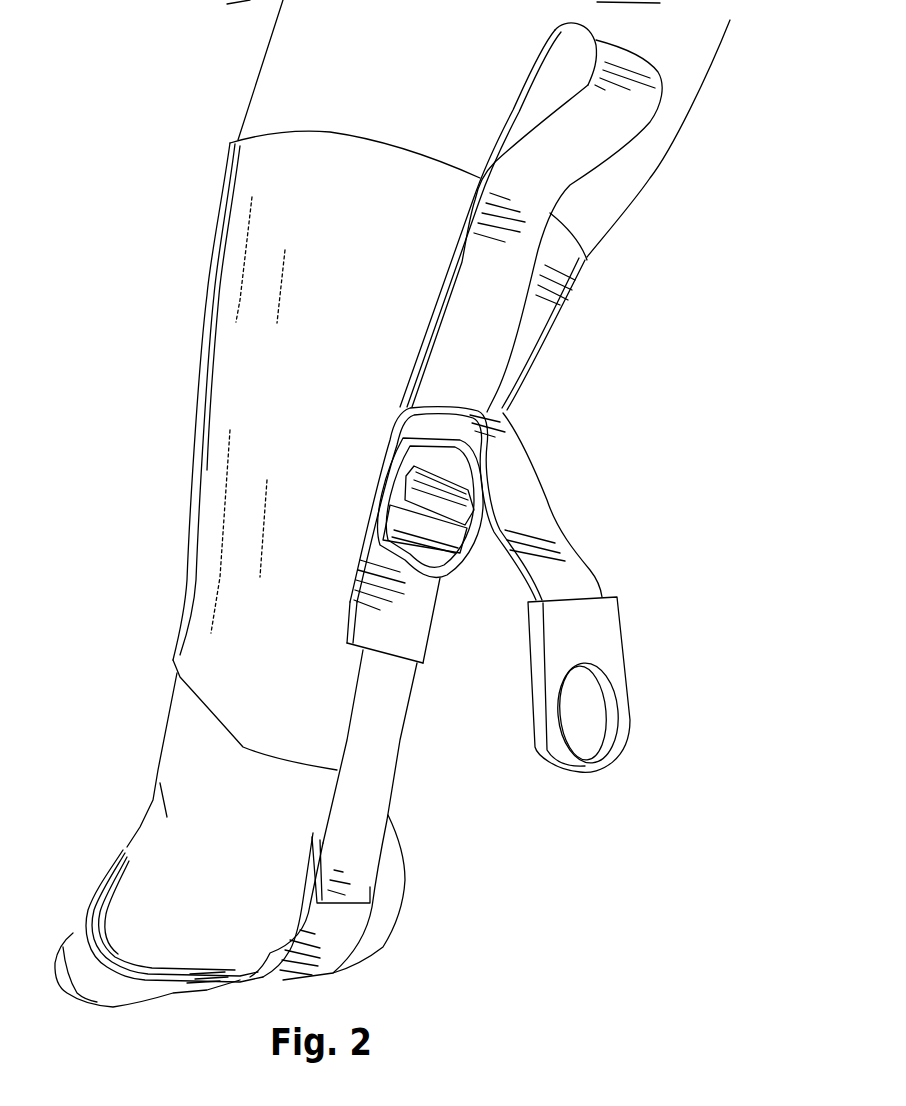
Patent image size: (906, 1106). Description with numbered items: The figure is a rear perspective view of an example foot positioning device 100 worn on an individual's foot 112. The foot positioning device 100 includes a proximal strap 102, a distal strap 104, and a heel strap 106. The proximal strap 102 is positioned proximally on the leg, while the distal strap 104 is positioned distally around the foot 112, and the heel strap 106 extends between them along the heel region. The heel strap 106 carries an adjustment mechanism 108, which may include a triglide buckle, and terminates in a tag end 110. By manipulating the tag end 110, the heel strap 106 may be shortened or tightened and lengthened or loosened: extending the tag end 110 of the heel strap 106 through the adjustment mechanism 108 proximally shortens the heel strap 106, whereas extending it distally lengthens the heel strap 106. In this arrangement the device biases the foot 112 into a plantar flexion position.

The foot positioning device 100 is at (180, 99).
The proximal strap 102 is at (220, 600).
The distal strap 104 is at (80, 933).
The heel strap 106 is at (375, 760).
The adjustment mechanism 108 is at (467, 545).
The tag end 110 is at (532, 522).
The foot 112 is at (180, 780).